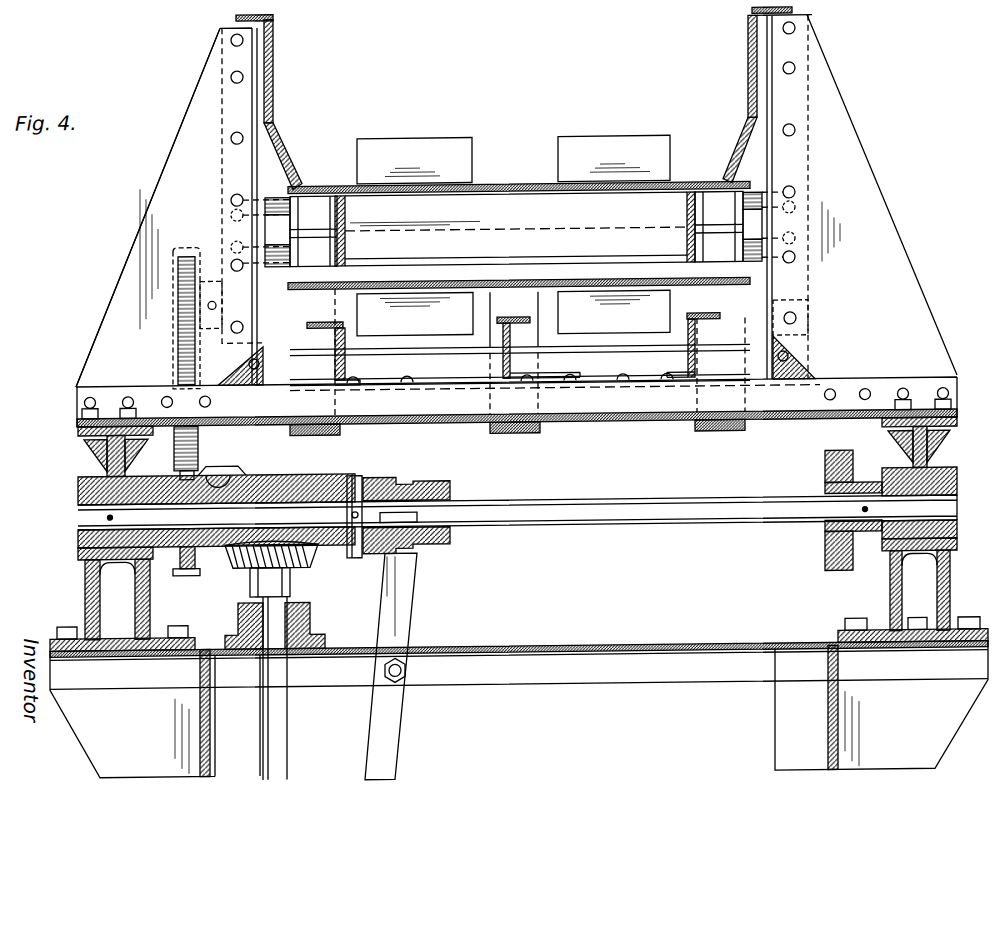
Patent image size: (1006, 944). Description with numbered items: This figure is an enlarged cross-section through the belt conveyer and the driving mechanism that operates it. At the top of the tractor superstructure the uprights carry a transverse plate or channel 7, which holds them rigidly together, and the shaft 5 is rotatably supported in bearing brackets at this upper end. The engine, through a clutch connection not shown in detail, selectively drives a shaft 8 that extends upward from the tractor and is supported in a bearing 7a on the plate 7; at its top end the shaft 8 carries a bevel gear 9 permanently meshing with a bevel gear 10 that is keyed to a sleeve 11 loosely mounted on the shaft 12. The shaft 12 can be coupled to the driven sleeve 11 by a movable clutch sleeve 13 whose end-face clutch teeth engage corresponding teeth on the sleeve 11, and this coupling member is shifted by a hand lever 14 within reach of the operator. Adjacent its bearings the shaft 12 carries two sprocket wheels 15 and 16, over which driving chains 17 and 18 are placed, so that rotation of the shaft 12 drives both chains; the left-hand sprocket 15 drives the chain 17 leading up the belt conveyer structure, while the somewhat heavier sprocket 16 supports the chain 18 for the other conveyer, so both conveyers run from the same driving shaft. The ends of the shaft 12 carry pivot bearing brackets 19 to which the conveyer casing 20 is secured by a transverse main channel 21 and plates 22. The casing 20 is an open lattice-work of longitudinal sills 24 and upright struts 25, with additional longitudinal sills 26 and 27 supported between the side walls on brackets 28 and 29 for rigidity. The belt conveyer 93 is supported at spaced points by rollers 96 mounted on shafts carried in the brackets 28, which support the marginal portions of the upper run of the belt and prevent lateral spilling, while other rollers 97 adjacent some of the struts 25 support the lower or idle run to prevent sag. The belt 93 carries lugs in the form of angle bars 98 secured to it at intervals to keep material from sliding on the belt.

The shaft 5 is at (85, 576).
The transverse plate or channel 7 is at (505, 648).
The bearing 7a is at (312, 630).
The shaft 8 is at (287, 780).
The bevel gear 9 is at (308, 560).
The bevel gear 10 is at (236, 560).
The sleeve 11 is at (283, 492).
The shaft 12 is at (493, 506).
The movable clutch sleeve 13 is at (424, 482).
The hand lever 14 is at (400, 708).
The sprocket wheel 15 is at (180, 572).
The sprocket wheel 16 is at (825, 547).
The driving chain 17 is at (200, 470).
The driving chain 18 is at (825, 462).
The pivot bearing bracket 19 is at (110, 452).
The conveyer casing 20 is at (156, 168).
The transverse main channel 21 is at (600, 415).
The plate 22 is at (118, 298).
The longitudinal sill 24 is at (252, 376).
The upright strut 25 is at (222, 97).
The additional longitudinal sill 26 is at (346, 200).
The additional longitudinal sill 27 is at (310, 330).
The bracket 28 is at (292, 188).
The bracket 29 is at (350, 378).
The belt conveyer 93 is at (516, 189).
The roller 96 is at (300, 196).
The roller 97 is at (340, 432).
The angle bar 98 is at (473, 150).